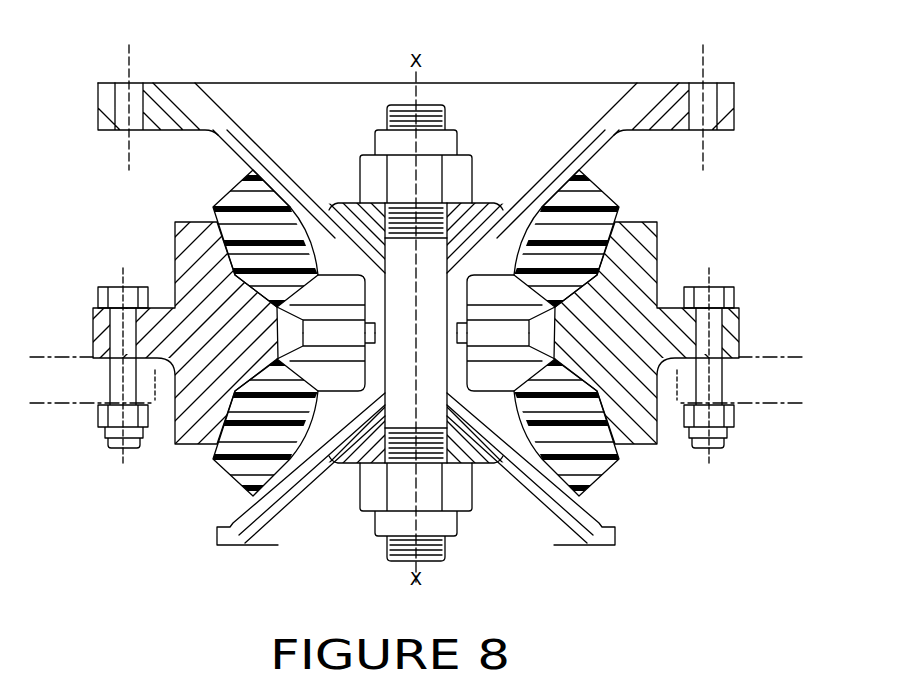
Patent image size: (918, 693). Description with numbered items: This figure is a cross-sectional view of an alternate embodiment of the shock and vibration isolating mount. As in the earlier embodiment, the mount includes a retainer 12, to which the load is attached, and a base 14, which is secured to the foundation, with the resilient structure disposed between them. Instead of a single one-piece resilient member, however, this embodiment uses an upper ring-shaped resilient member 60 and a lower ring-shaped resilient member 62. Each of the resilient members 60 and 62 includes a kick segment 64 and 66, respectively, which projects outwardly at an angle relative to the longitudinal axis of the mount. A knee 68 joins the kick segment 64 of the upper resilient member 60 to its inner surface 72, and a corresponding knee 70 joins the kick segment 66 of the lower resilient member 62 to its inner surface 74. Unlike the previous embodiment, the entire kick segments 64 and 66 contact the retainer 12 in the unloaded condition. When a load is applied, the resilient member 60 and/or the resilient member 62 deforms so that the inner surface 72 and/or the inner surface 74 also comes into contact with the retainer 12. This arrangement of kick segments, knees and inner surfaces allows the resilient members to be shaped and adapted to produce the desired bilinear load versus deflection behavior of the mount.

The retainer 12 is at (173, 82).
The base 14 is at (659, 235).
The upper ring-shaped resilient member 60 is at (231, 190).
The lower ring-shaped resilient member 62 is at (235, 478).
The kick segment 64 is at (270, 173).
The kick segment 66 is at (282, 500).
The knee 68 is at (322, 236).
The knee 70 is at (300, 470).
The inner surface 72 is at (332, 222).
The inner surface 74 is at (318, 428).